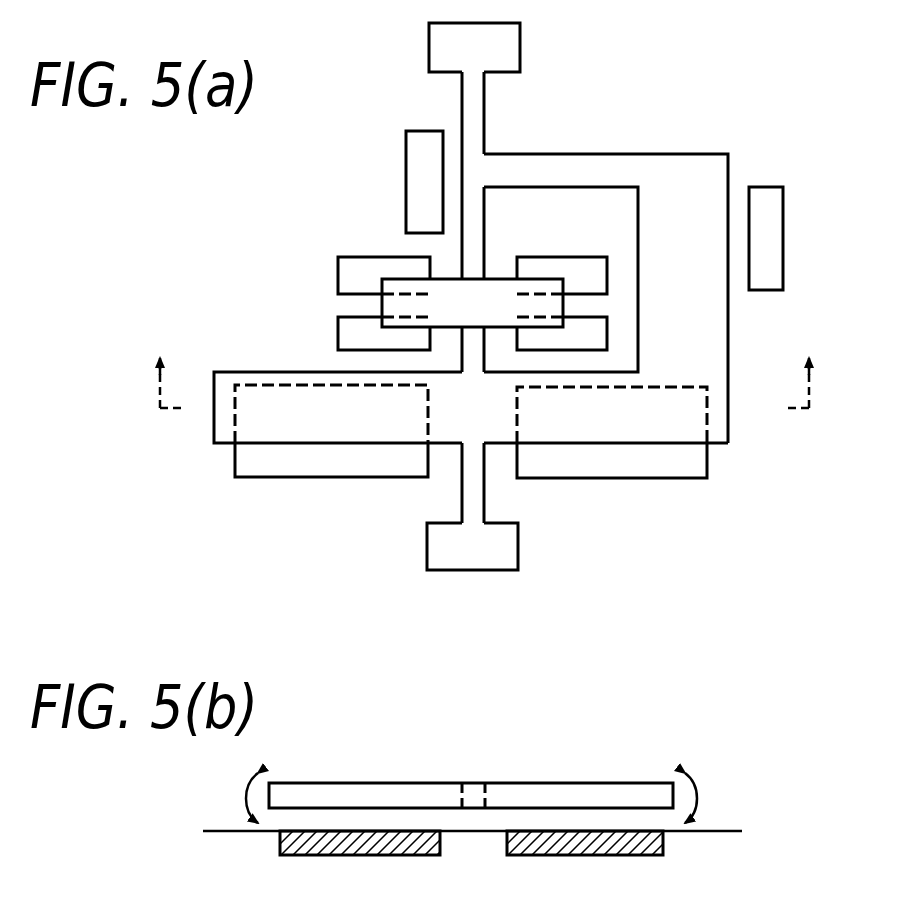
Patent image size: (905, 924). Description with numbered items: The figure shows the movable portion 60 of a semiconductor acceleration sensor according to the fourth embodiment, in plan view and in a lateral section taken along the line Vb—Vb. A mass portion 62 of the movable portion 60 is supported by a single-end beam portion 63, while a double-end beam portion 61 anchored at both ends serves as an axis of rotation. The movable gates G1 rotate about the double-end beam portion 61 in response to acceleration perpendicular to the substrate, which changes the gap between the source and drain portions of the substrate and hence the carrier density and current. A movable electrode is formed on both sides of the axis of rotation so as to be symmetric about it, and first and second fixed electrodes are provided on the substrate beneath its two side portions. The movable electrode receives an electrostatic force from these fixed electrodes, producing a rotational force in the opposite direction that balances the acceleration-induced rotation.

The movable portion 60 is at (626, 106).
The double-end beam portion 61 is at (510, 45).
The mass portion 62 is at (718, 182).
The single-end beam portion 63 is at (571, 160).
The movable gate G1 is at (407, 288).
The section line Vb— Vb is at (481, 362).